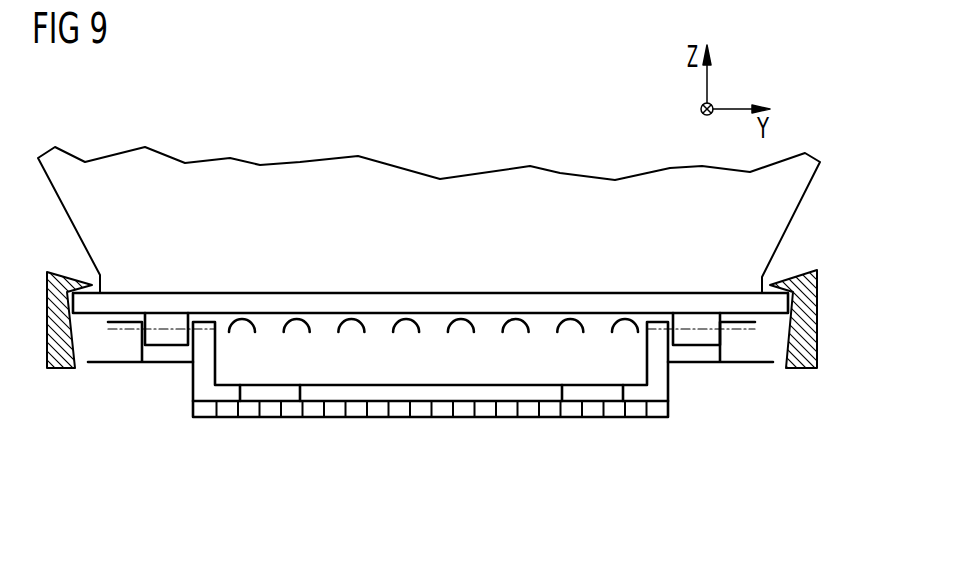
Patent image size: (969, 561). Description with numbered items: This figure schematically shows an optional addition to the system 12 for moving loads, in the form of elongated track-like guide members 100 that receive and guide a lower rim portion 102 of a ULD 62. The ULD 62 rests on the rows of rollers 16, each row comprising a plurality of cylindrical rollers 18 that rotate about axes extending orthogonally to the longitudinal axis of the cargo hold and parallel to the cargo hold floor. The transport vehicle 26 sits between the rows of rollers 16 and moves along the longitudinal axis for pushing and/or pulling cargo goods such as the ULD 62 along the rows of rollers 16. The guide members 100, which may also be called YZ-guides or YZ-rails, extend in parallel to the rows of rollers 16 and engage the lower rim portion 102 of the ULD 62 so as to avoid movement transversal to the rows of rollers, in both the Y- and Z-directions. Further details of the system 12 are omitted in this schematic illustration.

The system for moving loads 12 is at (762, 465).
The rows of rollers 16 is at (170, 388).
The cylindrical rollers 18 is at (168, 337).
The transport vehicle 26 is at (438, 368).
The ULD 62 is at (558, 183).
The guide members 100 is at (60, 270).
The lower rim portion 102 is at (100, 305).